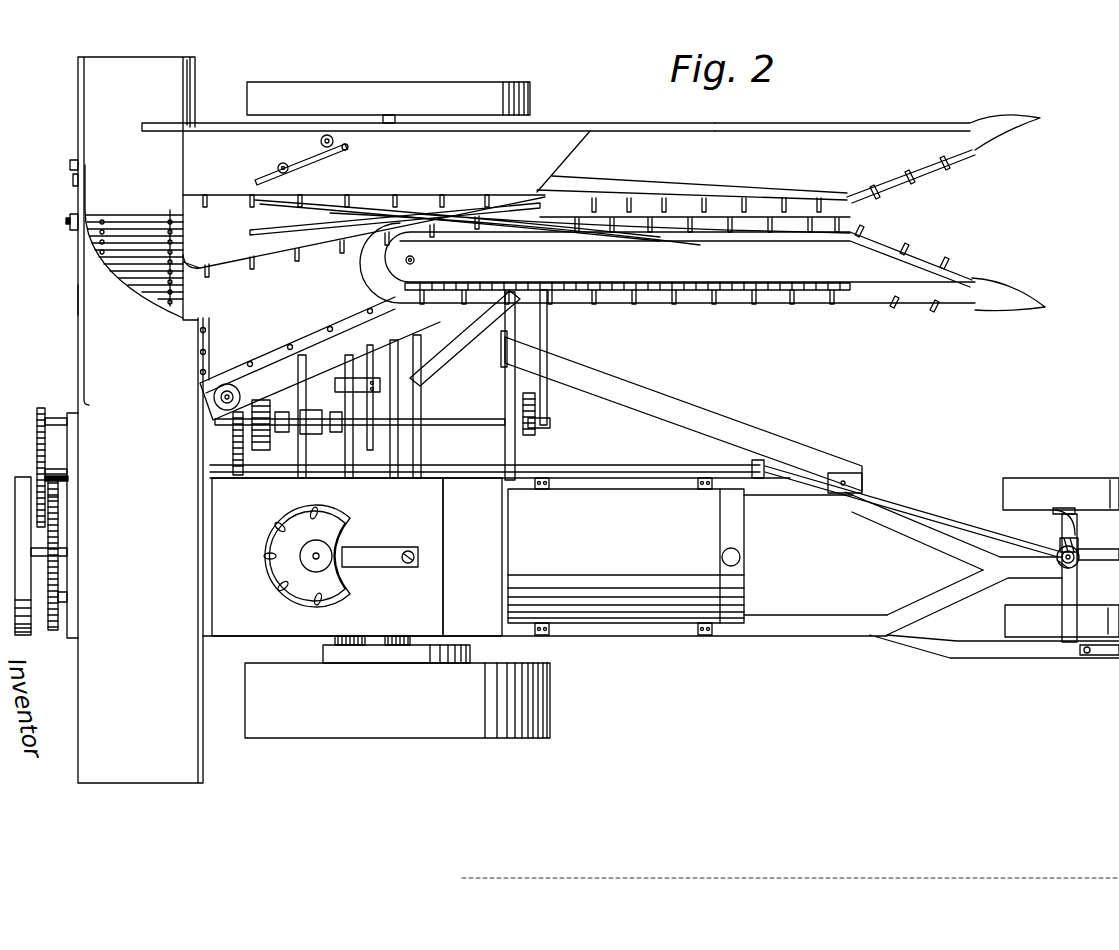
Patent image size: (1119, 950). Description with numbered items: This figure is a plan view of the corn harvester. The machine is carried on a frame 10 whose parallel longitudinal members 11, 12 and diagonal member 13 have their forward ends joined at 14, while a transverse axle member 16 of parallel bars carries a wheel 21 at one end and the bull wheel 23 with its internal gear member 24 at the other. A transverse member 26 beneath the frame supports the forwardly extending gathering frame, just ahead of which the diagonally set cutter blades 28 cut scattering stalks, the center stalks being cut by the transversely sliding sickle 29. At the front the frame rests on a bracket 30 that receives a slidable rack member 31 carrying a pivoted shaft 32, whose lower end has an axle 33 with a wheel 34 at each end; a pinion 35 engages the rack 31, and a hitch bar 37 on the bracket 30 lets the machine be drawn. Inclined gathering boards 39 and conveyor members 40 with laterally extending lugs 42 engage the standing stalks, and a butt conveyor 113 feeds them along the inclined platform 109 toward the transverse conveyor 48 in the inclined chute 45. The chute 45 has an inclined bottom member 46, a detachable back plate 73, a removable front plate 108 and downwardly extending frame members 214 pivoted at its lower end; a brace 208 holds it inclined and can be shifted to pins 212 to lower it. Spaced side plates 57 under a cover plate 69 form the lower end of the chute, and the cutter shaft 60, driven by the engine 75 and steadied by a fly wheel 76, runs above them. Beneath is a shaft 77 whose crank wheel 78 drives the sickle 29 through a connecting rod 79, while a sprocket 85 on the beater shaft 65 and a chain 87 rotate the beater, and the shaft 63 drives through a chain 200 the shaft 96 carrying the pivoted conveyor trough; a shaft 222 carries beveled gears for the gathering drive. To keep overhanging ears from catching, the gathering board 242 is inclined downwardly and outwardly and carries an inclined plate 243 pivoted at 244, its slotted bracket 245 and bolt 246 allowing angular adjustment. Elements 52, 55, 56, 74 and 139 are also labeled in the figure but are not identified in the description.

The frame 10 is at (843, 619).
The longitudinal frame member 11 is at (805, 496).
The longitudinal frame member 12 is at (791, 616).
The diagonal frame member 13 is at (927, 521).
The forward frame junction member 14 is at (1032, 554).
The axle member 16 is at (418, 364).
The wheel 21 is at (388, 102).
The bull wheel 23 is at (397, 700).
The internal gear member 24 is at (470, 652).
The transverse member 26 is at (504, 389).
The cutter blade 28 is at (565, 209).
The sickle 29 is at (566, 218).
The bracket 30 is at (1078, 565).
The rack member 31 is at (1057, 563).
The shaft 32 is at (1064, 572).
The axle 33 is at (1077, 519).
The wheel 34 is at (1075, 478).
The pinion 35 is at (1062, 512).
The hitch bar 37 is at (1097, 552).
The gathering board 39 is at (702, 213).
The conveyor member 40 is at (444, 285).
The lug 42 is at (876, 201).
The inclined chute 45 is at (73, 183).
The inclined bottom member 46 is at (138, 235).
The transverse conveyor member 48 is at (132, 226).
The rivets 52 is at (172, 283).
The vertical post 55 is at (1078, 592).
The strut 56 is at (918, 500).
The side plate 57 is at (74, 548).
The cutter shaft 60 is at (41, 556).
The shaft 63 is at (64, 480).
The beater shaft 65 is at (56, 468).
The cover plate 69 is at (140, 550).
The back plate 73 is at (84, 126).
The curved guide 74 is at (134, 262).
The engine 75 is at (626, 556).
The fly wheel 76 is at (33, 637).
The shaft 77 is at (465, 427).
The crank wheel 78 is at (537, 431).
The connecting rod 79 is at (548, 396).
The sprocket 85 is at (58, 498).
The chain 87 is at (38, 408).
The shaft 96 is at (67, 598).
The front plate 108 is at (187, 84).
The inclined platform 109 is at (364, 254).
The butt conveyor 113 is at (283, 344).
The bar 139 is at (240, 258).
The chain 200 is at (58, 522).
The brace 208 is at (70, 222).
The pin 212 is at (72, 165).
The frame member 214 is at (78, 300).
The shaft 222 is at (300, 459).
The gathering board 242 is at (386, 169).
The inclined plate 243 is at (316, 164).
The pivot 244 is at (291, 159).
The slotted bracket 245 is at (347, 148).
The bolt 246 is at (321, 140).